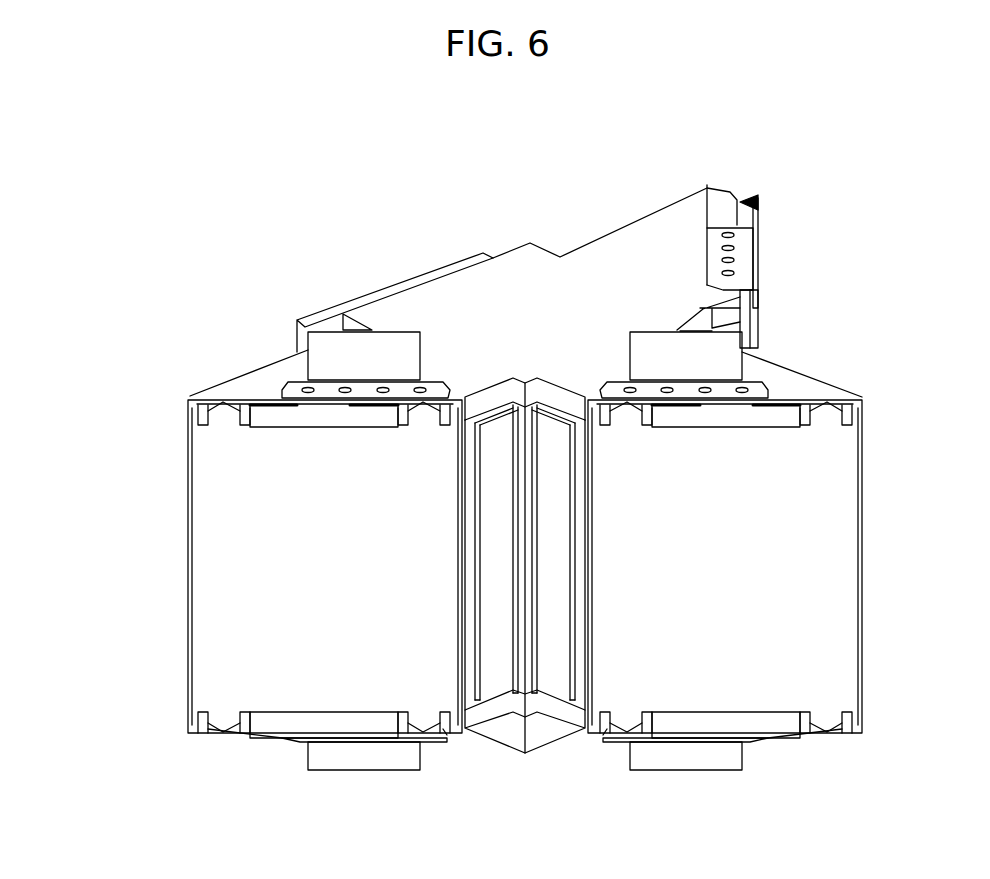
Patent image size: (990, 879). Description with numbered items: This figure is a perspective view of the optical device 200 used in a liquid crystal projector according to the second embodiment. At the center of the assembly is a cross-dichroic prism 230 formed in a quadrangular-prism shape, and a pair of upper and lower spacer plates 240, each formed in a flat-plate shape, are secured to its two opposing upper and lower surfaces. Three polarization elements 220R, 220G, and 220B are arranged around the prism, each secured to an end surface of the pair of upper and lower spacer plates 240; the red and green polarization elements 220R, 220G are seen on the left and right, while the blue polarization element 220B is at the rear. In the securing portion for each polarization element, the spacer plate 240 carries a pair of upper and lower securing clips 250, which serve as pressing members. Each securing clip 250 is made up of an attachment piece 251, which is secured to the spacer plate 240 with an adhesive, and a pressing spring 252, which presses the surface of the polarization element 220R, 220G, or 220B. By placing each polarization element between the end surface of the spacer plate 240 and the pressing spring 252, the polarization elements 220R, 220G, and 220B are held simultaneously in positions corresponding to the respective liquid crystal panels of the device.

The optical device 200 is at (293, 225).
The polarization element 220R is at (212, 540).
The polarization element 220G is at (843, 534).
The polarization element 220B is at (750, 292).
The cross-dichroic prism 230 is at (425, 278).
The spacer plate 240 is at (658, 238).
The securing clip 250 is at (722, 354).
The attachment piece 251 is at (763, 384).
The pressing spring 252 is at (778, 418).